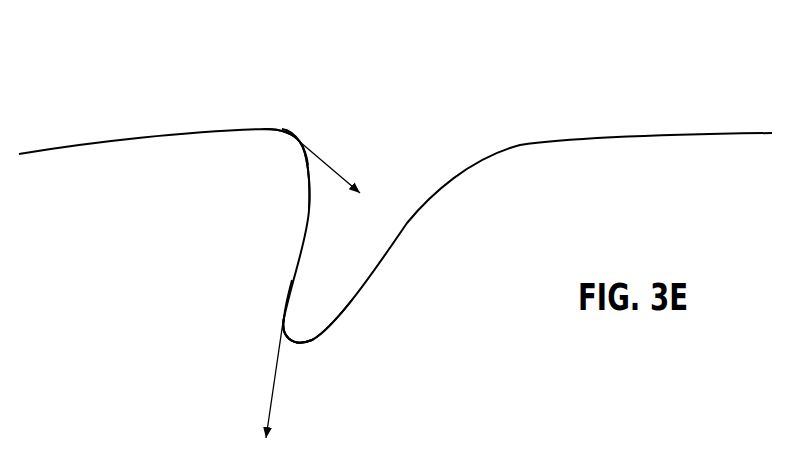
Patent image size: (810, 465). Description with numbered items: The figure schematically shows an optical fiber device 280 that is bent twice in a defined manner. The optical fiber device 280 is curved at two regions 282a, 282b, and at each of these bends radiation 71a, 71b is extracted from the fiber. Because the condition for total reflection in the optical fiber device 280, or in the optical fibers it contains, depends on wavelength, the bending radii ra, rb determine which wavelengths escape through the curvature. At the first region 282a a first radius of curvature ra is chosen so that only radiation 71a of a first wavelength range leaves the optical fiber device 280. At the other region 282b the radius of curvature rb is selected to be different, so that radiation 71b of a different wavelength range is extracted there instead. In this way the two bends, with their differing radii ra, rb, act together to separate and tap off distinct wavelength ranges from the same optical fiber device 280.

The optical fiber device 280 is at (78, 144).
The first curved region 282a is at (309, 121).
The second curved region 282b is at (300, 358).
The radiation of first wavelength range 71a is at (328, 166).
The radiation of different wavelength range 71b is at (272, 390).
The first radius of curvature ra is at (298, 144).
The second radius of curvature rb is at (328, 292).